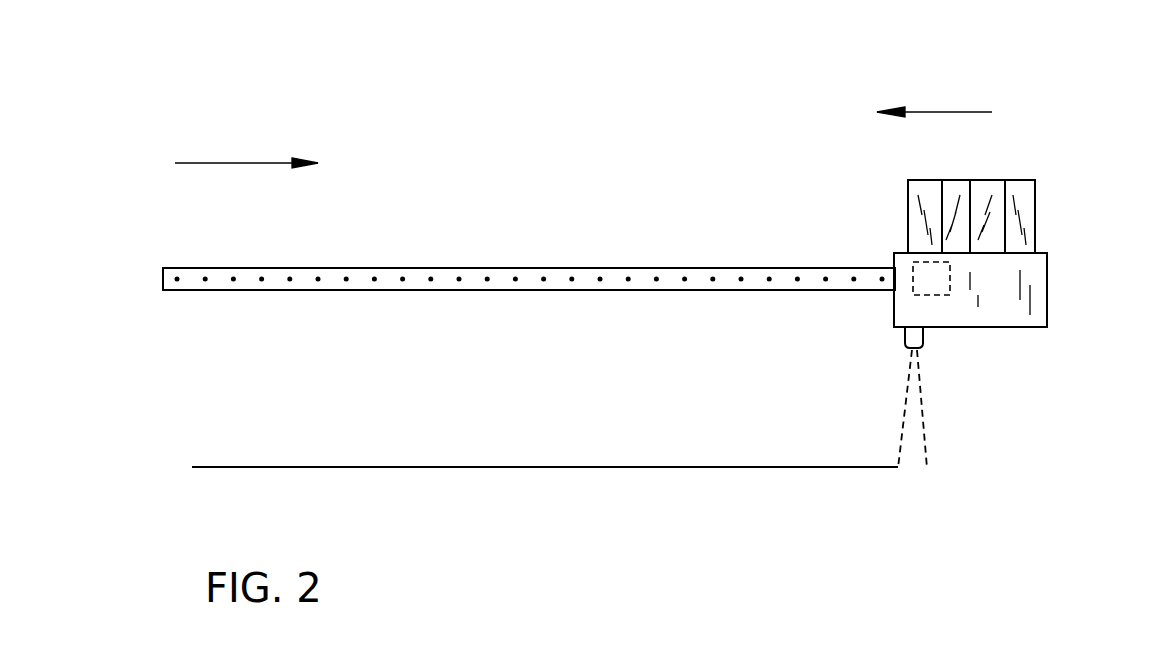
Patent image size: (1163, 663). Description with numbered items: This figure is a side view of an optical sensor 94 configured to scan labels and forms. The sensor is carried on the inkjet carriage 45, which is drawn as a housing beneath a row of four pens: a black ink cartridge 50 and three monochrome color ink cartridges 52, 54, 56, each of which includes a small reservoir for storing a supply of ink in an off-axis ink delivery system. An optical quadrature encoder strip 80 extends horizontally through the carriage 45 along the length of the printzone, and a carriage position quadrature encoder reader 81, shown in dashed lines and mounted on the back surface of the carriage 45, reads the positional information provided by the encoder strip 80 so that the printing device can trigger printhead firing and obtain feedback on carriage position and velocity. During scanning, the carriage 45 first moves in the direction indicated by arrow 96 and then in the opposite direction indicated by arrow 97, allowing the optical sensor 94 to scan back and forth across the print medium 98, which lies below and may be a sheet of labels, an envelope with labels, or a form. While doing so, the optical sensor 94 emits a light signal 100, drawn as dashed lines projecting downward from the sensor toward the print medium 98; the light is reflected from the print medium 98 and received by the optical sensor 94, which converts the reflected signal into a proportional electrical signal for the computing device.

The inkjet carriage 45 is at (1040, 321).
The black ink cartridge 50 is at (922, 186).
The monochrome color ink cartridge 52 is at (958, 183).
The monochrome color ink cartridge 54 is at (990, 188).
The monochrome color ink cartridge 56 is at (1028, 187).
The optical quadrature encoder strip 80 is at (272, 272).
The carriage position quadrature encoder reader 81 is at (950, 277).
The optical sensor 94 is at (925, 338).
The arrow 96 is at (952, 112).
The arrow 97 is at (240, 162).
The print medium 98 is at (591, 468).
The light signal 100 is at (927, 435).